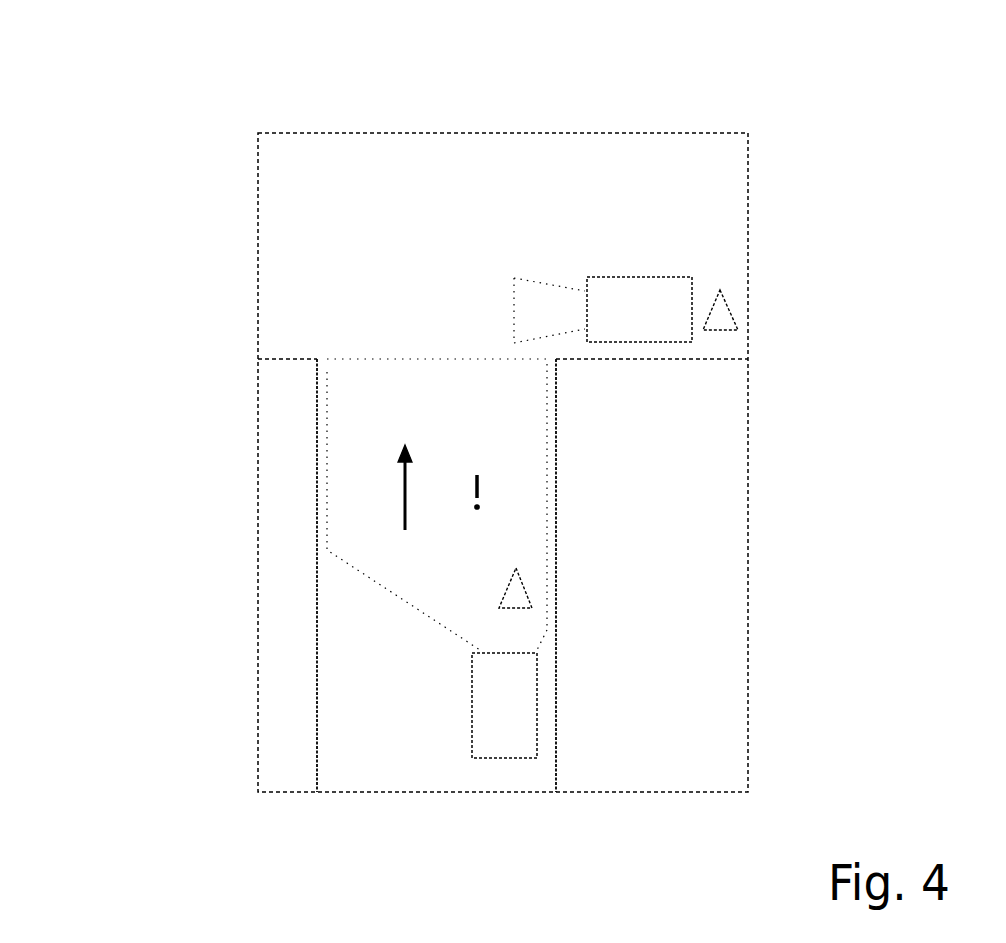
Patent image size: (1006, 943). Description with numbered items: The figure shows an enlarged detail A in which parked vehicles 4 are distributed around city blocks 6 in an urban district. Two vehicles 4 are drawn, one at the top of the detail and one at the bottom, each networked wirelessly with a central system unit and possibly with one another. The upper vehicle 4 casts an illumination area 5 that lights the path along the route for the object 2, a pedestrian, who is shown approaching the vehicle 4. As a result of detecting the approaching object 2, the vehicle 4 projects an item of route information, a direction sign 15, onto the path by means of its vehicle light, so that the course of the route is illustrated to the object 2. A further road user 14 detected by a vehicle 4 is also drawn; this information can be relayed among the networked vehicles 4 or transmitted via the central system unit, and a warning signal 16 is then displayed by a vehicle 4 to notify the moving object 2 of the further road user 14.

The object 2 is at (516, 590).
The vehicle 4 is at (638, 310).
The illumination area 5 is at (377, 585).
The city block 6 is at (278, 520).
The further road user 14 is at (722, 312).
The direction sign 15 is at (405, 487).
The warning signal 16 is at (480, 480).
The detail A is at (752, 236).